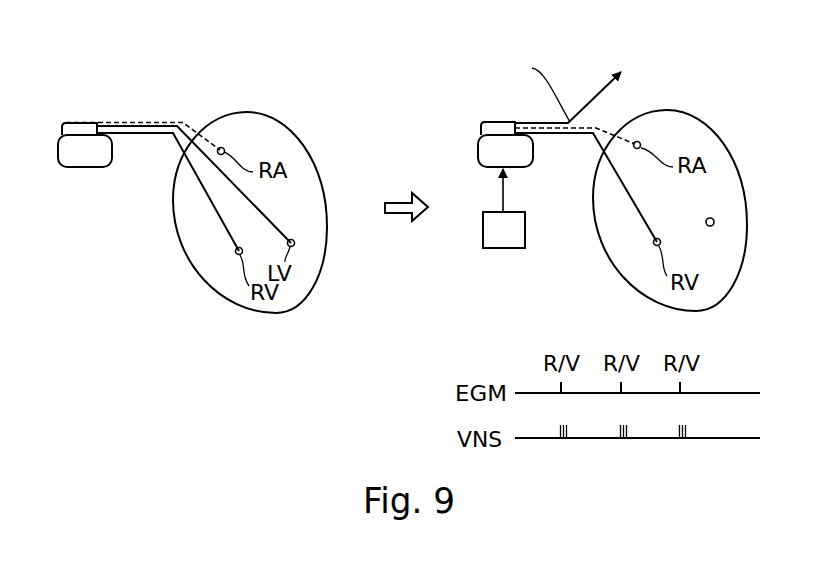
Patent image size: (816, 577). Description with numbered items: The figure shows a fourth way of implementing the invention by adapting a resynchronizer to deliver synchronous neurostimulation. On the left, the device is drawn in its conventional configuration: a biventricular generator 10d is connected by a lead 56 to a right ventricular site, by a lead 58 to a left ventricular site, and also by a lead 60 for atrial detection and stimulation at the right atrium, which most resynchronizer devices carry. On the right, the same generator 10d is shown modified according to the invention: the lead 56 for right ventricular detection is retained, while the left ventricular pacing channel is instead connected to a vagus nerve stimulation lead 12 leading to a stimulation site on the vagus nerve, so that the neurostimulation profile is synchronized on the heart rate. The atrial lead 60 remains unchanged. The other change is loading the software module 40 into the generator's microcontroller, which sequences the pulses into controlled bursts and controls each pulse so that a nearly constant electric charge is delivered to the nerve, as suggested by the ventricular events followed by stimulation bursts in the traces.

The generator 10d is at (90, 167).
The VNS lead 12 is at (602, 83).
The software module 40 is at (518, 248).
The lead 56 is at (223, 230).
The lead 58 is at (256, 208).
The lead 60 is at (193, 130).